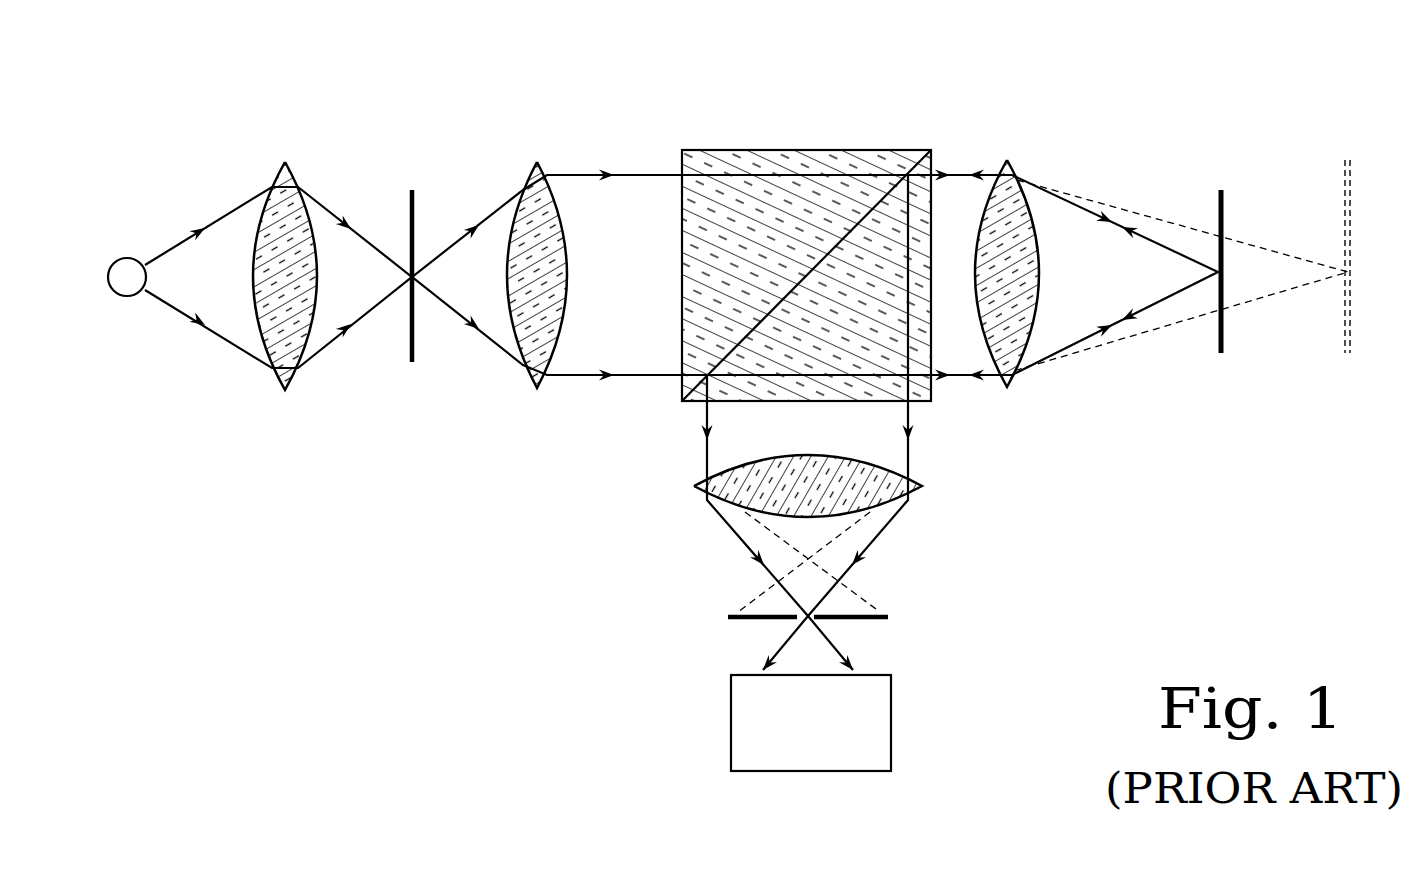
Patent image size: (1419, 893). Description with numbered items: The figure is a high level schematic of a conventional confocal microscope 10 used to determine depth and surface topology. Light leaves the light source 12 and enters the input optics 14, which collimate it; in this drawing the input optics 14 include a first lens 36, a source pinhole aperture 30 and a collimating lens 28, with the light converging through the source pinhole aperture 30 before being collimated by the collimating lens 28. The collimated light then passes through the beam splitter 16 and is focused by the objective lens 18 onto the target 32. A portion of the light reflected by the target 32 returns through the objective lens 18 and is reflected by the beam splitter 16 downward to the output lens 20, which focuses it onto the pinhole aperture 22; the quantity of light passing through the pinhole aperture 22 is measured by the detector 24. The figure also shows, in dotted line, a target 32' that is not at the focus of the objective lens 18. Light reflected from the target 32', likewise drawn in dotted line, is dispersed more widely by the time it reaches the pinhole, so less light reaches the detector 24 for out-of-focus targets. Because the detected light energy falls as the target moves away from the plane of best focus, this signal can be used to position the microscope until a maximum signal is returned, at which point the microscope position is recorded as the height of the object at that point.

The confocal microscope 10 is at (924, 66).
The light source 12 is at (128, 257).
The input optics 14 is at (410, 345).
The beam splitter 16 is at (790, 150).
The objective lens 18 is at (1005, 388).
The output lens 20 is at (922, 486).
The pinhole aperture 22 is at (888, 616).
The detector 24 is at (827, 736).
The collimating lens 28 is at (537, 312).
The source pinhole aperture 30 is at (410, 219).
The target 32 is at (1194, 242).
The out-of-focus target 32' is at (1361, 225).
The condenser lens 36 is at (284, 391).